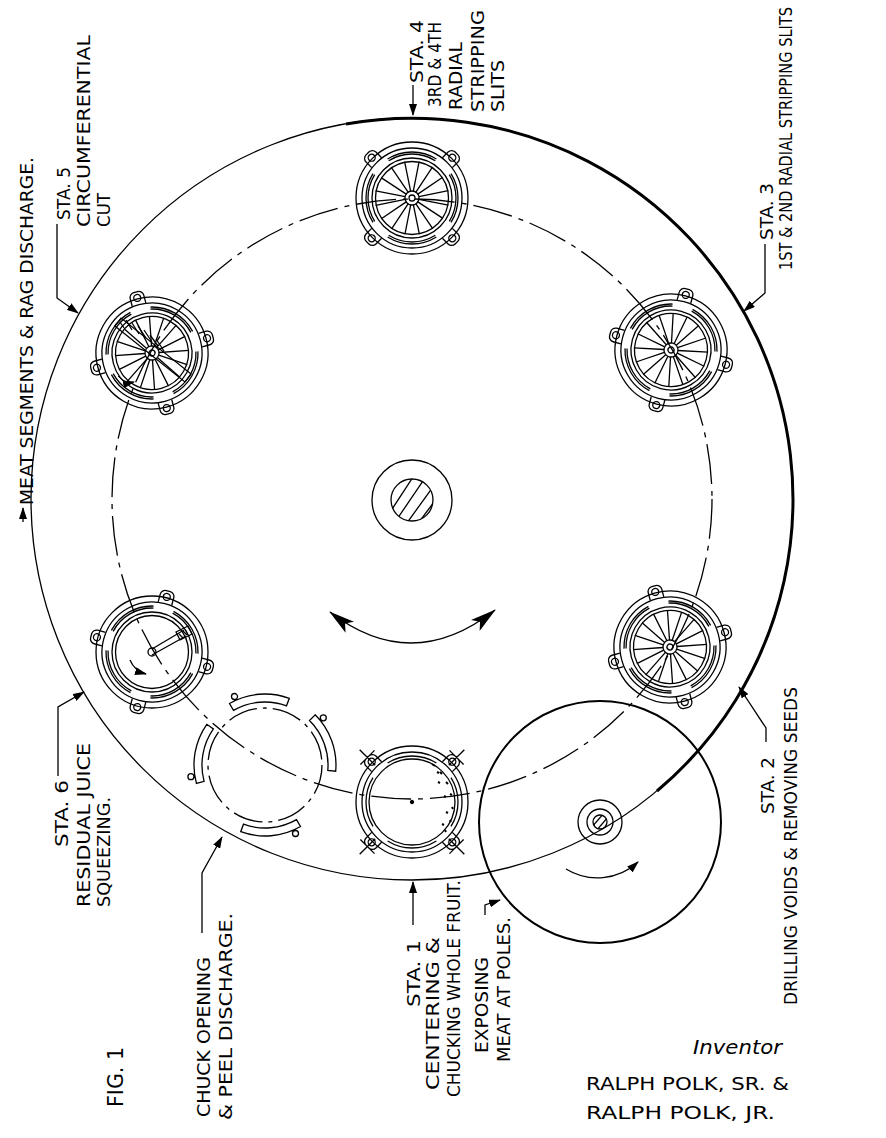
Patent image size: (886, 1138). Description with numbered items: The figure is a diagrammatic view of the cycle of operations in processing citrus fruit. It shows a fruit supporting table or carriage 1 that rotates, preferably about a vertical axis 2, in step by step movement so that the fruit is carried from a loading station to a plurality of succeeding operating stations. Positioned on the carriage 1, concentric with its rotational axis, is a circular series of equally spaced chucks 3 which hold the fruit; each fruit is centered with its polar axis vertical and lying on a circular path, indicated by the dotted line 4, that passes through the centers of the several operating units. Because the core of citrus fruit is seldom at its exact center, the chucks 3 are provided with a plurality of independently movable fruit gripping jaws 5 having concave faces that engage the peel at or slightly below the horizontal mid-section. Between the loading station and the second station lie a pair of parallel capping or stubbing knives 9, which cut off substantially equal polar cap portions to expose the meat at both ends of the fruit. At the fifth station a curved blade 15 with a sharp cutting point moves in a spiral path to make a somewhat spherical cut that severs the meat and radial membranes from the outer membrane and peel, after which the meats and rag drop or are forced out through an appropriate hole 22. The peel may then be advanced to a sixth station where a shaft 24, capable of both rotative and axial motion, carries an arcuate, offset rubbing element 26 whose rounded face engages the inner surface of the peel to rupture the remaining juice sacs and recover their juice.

The fruit supporting table or carriage 1 is at (226, 166).
The vertical axis 2 is at (410, 472).
The chucks 3 is at (394, 262).
The circular path 4 is at (533, 226).
The fruit gripping jaws 5 is at (365, 195).
The capping or stubbing knives 9 is at (593, 943).
The curved blade 15 is at (212, 350).
The hole 22 is at (428, 252).
The shaft 24 is at (142, 640).
The rubbing element 26 is at (176, 638).